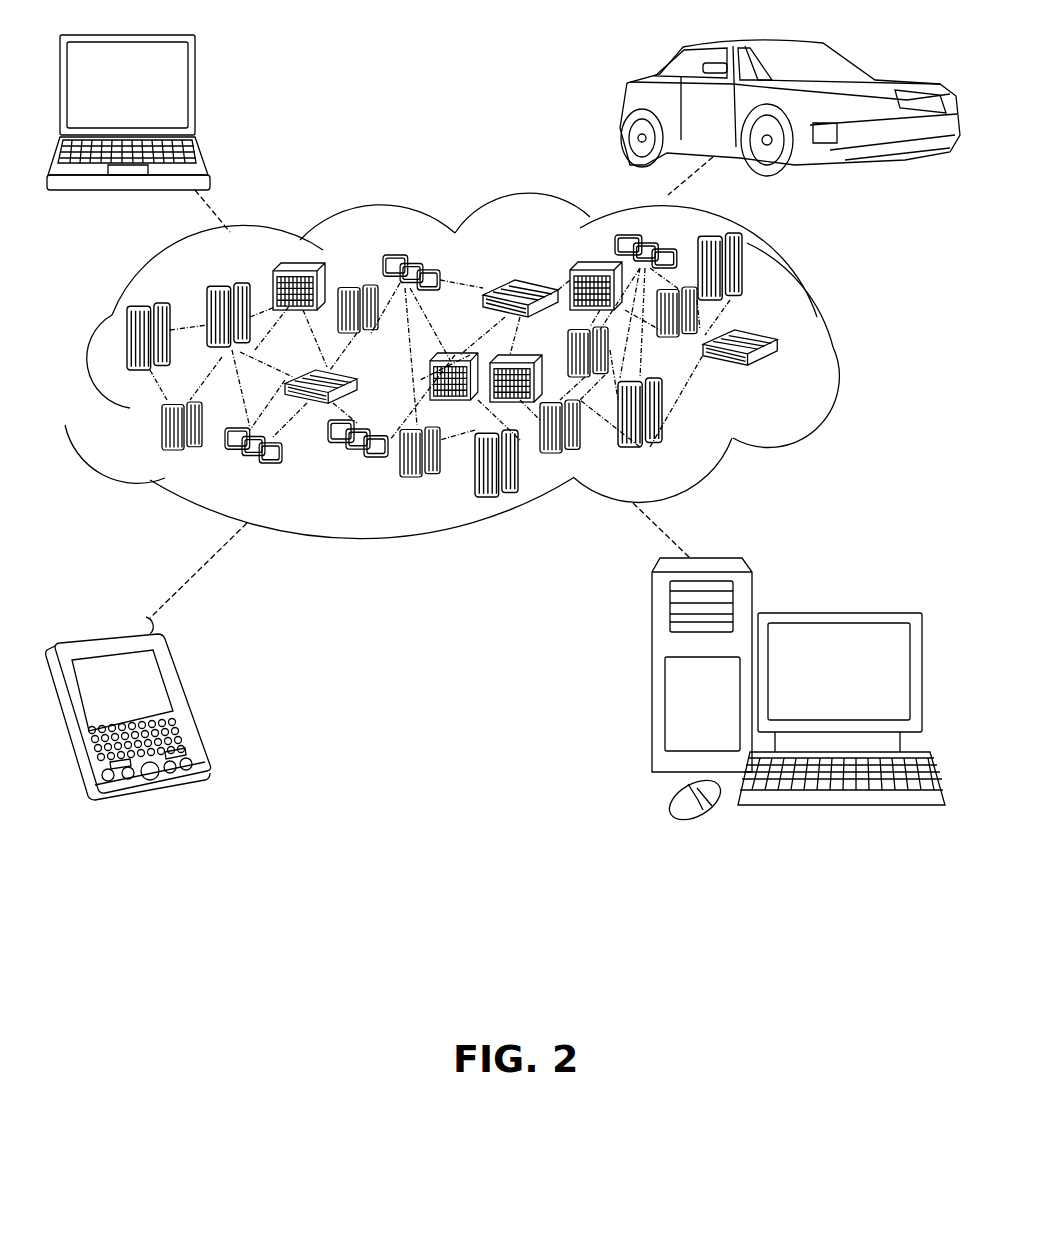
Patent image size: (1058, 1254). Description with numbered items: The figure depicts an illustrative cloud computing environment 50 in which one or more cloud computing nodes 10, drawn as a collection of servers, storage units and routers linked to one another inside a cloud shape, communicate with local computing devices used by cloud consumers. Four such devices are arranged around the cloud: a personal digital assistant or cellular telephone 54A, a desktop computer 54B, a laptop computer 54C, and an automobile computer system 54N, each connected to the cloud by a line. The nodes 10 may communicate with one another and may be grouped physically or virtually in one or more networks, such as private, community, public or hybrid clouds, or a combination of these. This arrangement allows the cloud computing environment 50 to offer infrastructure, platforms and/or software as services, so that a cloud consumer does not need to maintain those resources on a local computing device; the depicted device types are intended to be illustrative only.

The cloud computing environment 50 is at (835, 343).
The cloud computing nodes 10 is at (780, 372).
The personal digital assistant or cellular telephone 54A is at (188, 700).
The desktop computer 54B is at (836, 612).
The laptop computer 54C is at (193, 90).
The automobile computer system 54N is at (627, 112).